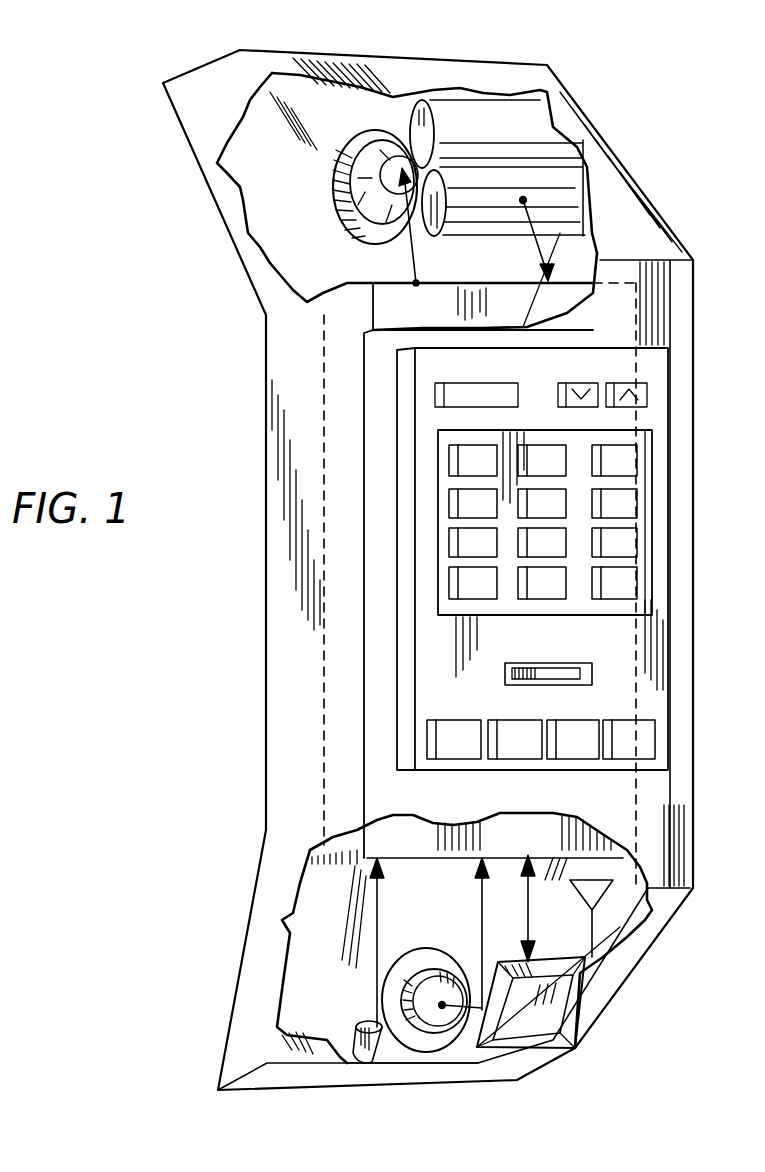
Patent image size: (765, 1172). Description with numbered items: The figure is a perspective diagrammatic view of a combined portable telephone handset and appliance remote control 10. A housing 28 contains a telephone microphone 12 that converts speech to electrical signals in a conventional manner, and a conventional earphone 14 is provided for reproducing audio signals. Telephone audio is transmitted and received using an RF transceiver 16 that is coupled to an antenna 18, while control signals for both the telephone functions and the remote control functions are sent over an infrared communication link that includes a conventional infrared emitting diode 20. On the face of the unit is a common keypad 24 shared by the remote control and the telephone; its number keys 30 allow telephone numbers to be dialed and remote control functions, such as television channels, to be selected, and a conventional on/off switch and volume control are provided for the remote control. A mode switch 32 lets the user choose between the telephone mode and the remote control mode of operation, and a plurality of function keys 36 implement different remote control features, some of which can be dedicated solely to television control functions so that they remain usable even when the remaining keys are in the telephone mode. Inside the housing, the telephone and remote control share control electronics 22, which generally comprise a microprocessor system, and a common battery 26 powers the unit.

The combined portable telephone handset and appliance remote control 10 is at (255, 592).
The telephone microphone 12 is at (437, 1017).
The earphone 14 is at (334, 199).
The RF transceiver 16 is at (525, 1007).
The antenna 18 is at (593, 893).
The infrared emitting diode 20 is at (370, 1060).
The control electronics 22 is at (307, 302).
The keypad 24 is at (670, 490).
The battery 26 is at (487, 193).
The housing 28 is at (677, 318).
The number keys 30 is at (637, 518).
The mode switch 32 is at (547, 665).
The function keys 36 is at (457, 759).